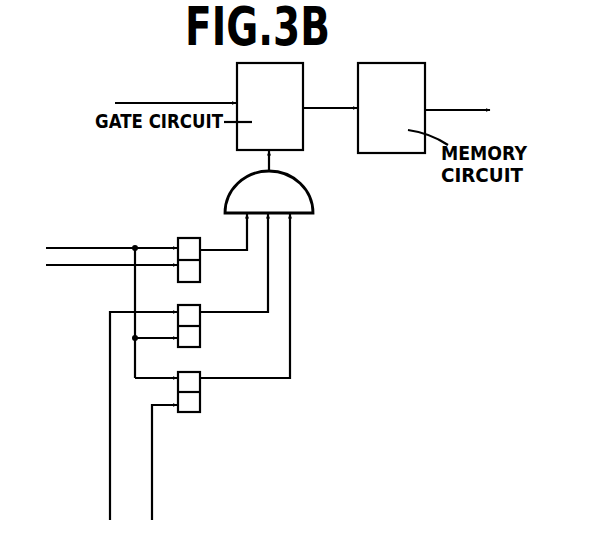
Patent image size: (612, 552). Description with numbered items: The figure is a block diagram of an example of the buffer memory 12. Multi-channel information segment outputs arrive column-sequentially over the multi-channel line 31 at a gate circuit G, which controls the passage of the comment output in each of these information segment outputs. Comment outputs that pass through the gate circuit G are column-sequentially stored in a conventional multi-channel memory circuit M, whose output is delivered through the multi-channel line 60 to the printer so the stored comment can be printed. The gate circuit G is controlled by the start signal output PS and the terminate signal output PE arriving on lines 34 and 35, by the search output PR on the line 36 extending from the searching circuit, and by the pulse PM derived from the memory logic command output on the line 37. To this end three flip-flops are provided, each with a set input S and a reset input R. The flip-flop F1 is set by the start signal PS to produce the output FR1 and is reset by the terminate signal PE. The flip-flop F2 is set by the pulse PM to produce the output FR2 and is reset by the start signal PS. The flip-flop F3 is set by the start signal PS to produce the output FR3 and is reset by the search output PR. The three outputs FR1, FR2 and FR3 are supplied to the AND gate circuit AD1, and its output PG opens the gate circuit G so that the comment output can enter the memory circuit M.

The buffer memory 12 is at (196, 173).
The multi-channel line 31 is at (191, 103).
The multi-channel line 60 is at (474, 110).
The line 34 is at (62, 247).
The line 35 is at (62, 266).
The line 36 is at (152, 503).
The line 37 is at (110, 503).
The gate circuit G is at (303, 88).
The multi-channel memory circuit M is at (425, 88).
The output of AND gate circuit PG is at (288, 163).
The AND gate circuit AD1 is at (310, 203).
The flip-flop F1 is at (200, 270).
The flip-flop F2 is at (200, 340).
The flip-flop F3 is at (200, 405).
The output of flip-flop F1 FR1 is at (223, 232).
The output of flip-flop F2 FR2 is at (234, 263).
The output of flip-flop F3 FR3 is at (245, 296).